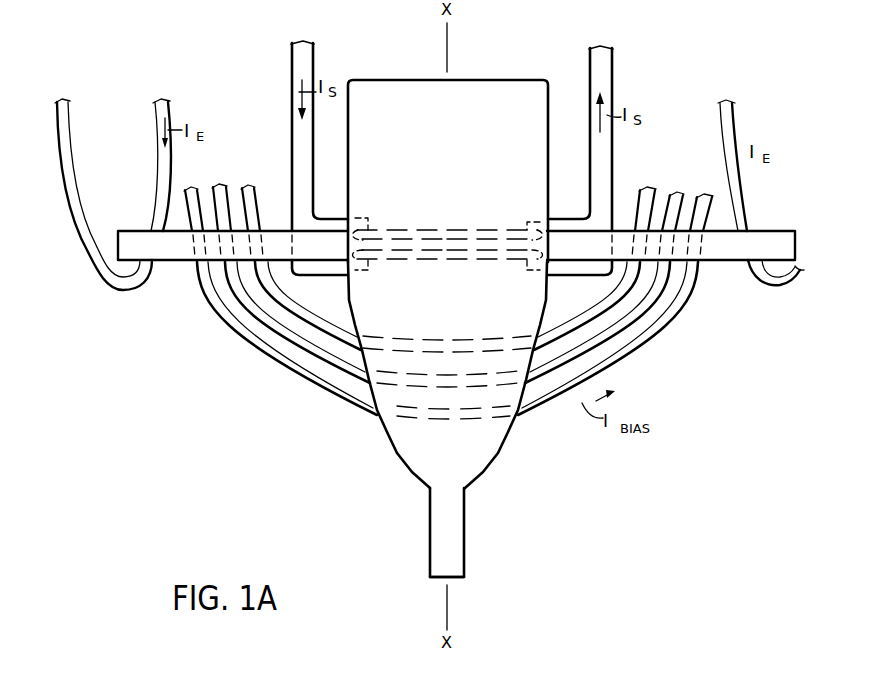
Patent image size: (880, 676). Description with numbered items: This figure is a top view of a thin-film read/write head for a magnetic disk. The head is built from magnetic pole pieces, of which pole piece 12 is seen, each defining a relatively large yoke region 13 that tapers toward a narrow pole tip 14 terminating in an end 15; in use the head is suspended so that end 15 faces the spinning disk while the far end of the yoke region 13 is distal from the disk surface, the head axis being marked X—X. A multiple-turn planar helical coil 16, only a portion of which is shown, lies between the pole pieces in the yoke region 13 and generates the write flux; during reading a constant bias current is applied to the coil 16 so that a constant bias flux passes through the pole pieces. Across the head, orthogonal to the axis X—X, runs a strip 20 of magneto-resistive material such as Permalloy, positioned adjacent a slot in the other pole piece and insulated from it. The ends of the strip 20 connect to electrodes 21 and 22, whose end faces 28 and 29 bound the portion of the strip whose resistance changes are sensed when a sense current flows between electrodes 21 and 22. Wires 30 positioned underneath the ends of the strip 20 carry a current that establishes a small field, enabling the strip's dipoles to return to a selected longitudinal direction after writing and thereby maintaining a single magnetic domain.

The pole piece 12 is at (393, 447).
The yoke region 13 is at (492, 92).
The pole tip 14 is at (470, 488).
The end 15 is at (435, 577).
The multiple-turn planar helical coil 16 is at (713, 185).
The strip of magneto-resistive material 20 is at (727, 252).
The electrode 21 is at (301, 59).
The electrode 22 is at (607, 78).
The end face 28 is at (370, 230).
The end face 29 is at (527, 227).
The wires 30 is at (65, 127).